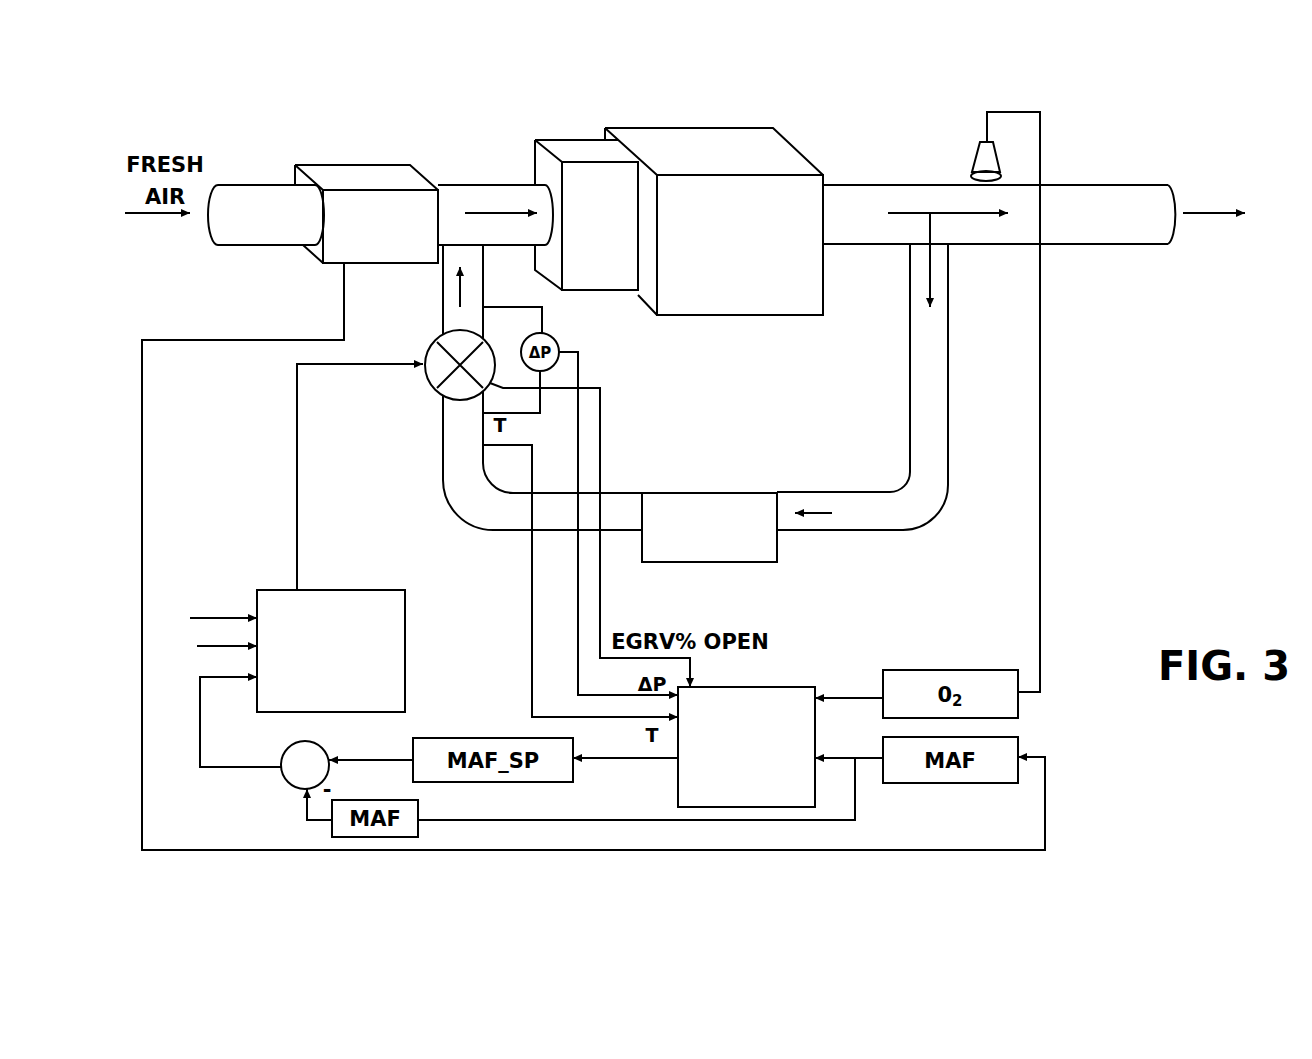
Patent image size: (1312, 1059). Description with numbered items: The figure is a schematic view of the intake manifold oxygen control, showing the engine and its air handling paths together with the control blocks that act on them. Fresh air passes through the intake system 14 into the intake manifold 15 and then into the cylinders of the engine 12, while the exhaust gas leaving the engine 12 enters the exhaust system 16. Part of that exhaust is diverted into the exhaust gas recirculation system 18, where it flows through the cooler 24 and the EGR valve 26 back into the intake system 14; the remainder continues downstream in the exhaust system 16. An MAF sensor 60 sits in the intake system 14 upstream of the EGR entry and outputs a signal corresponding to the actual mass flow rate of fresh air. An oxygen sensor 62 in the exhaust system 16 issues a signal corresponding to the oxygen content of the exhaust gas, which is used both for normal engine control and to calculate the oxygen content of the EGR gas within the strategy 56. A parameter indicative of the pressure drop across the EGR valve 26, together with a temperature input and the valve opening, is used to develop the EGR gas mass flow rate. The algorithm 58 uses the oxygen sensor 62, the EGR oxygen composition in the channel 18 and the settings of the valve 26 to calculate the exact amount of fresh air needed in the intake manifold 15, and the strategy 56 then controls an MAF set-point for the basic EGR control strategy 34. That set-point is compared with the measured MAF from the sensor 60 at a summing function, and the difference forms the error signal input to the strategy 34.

The engine 12 is at (733, 203).
The intake system 14 is at (492, 197).
The intake manifold 15 is at (592, 178).
The exhaust system 16 is at (867, 197).
The exhaust gas recirculation system 18 is at (925, 393).
The cooler 24 is at (762, 562).
The EGR valve 26 is at (438, 367).
The basic EGR control strategy 34 is at (338, 590).
The strategy 56 is at (803, 687).
The algorithm 58 is at (678, 780).
The MAF sensor 60 is at (345, 202).
The oxygen sensor 62 is at (967, 178).